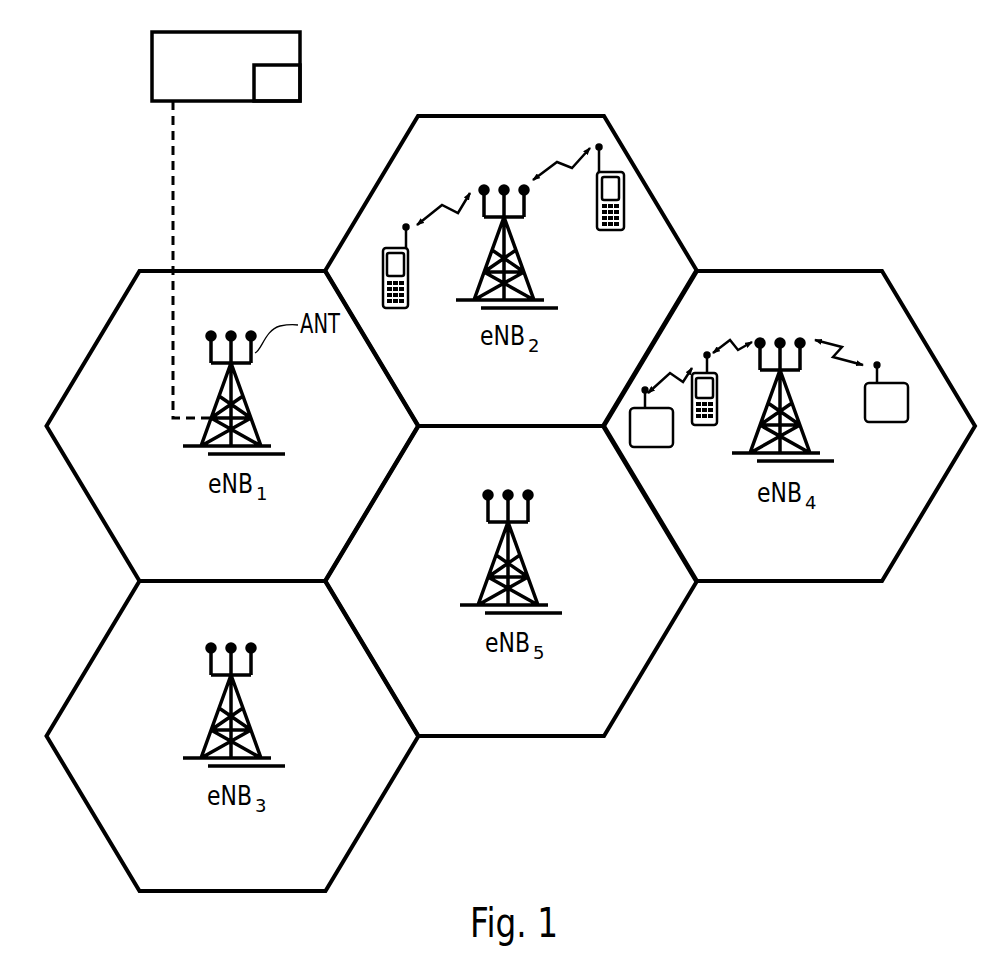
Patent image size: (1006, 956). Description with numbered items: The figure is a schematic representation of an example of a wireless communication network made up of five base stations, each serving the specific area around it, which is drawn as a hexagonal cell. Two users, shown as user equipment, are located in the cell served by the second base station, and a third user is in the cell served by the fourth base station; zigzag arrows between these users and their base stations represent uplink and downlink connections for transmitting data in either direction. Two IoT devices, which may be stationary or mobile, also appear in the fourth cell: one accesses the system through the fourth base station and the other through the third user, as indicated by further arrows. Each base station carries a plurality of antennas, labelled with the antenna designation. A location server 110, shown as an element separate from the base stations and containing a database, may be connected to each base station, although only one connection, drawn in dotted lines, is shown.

The location server 110 is at (227, 102).